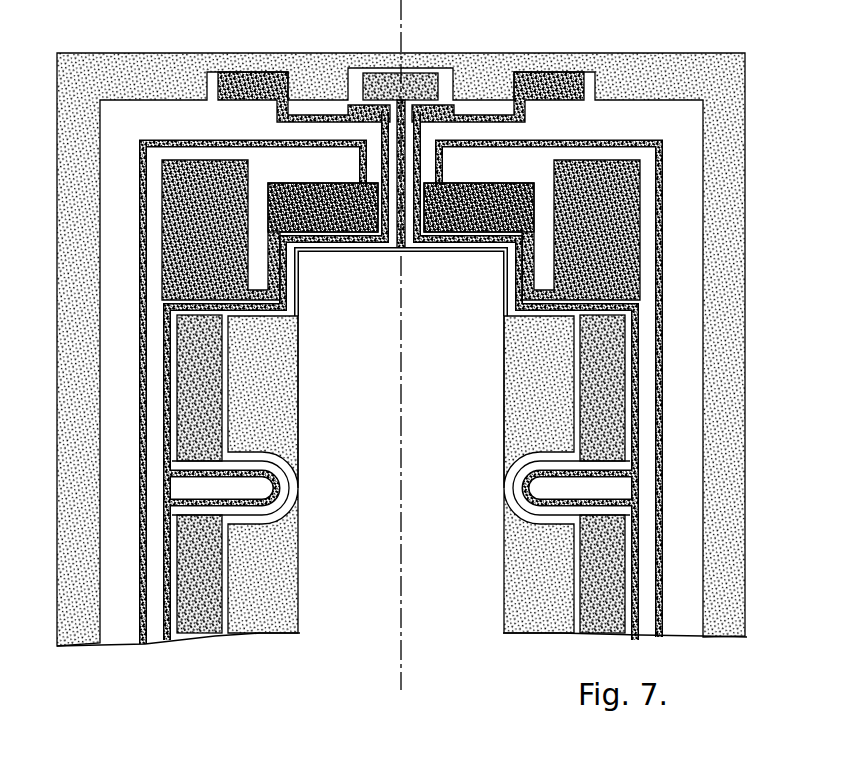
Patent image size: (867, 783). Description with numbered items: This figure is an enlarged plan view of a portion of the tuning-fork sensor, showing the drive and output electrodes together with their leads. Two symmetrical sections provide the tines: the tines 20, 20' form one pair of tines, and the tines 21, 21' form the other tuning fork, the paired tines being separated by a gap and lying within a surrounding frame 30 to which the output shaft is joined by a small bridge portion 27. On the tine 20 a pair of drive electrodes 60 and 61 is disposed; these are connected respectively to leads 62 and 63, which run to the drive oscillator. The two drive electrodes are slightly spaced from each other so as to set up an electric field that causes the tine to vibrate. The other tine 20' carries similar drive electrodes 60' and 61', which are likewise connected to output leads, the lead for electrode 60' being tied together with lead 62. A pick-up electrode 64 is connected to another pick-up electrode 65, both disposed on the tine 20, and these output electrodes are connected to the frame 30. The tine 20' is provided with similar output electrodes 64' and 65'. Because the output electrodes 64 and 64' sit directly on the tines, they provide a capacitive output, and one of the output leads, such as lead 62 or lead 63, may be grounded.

The surrounding frame 30 is at (172, 62).
The lead 62 is at (430, 78).
The bridge portion 27 is at (401, 394).
The output electrode 64' is at (270, 230).
The pick-up electrode 65' is at (323, 207).
The pick-up electrode 64 is at (532, 230).
The pick-up electrode 65 is at (479, 207).
The lead 63 is at (463, 241).
The drive electrode 61' is at (319, 402).
The drive electrode 61 is at (482, 402).
The drive electrode 60' is at (230, 474).
The drive electrode 60 is at (571, 474).
The tine 20' is at (263, 402).
The tine 20 is at (539, 402).
The tine 21' is at (263, 560).
The tine 21 is at (539, 560).